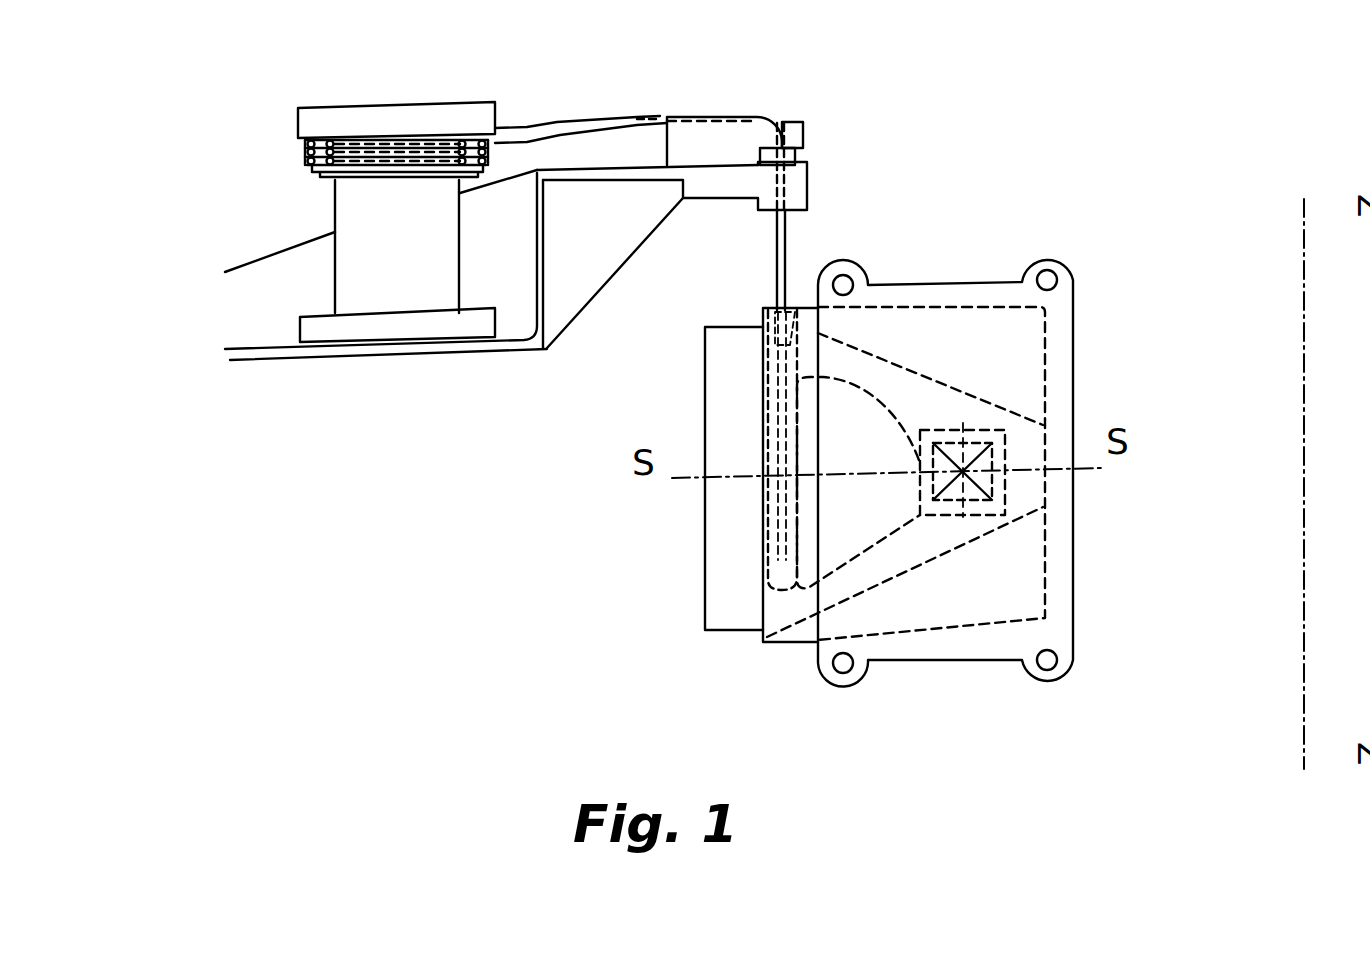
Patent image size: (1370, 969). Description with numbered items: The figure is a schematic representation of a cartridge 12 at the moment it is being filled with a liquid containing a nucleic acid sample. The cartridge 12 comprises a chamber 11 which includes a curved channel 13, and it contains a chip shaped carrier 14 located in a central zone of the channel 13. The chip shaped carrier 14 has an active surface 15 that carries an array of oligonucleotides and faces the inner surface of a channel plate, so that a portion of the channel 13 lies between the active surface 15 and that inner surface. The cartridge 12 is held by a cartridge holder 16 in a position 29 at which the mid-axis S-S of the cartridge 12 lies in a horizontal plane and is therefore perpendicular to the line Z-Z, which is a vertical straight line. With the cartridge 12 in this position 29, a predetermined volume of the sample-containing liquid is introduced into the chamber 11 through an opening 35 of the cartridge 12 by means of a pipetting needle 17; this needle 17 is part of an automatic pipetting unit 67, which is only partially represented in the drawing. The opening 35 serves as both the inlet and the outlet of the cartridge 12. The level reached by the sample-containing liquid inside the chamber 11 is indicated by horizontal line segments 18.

The automatic pipetting unit 67 is at (503, 102).
The pipetting needle 17 is at (778, 258).
The opening 35 is at (797, 308).
The chamber 11 is at (763, 638).
The cartridge 12 is at (797, 643).
The curved channel 13 is at (990, 542).
The chip shaped carrier 14 is at (983, 428).
The active surface 15 is at (983, 468).
The cartridge holder 16 is at (980, 660).
The horizontal line segments 18 is at (913, 507).
The position 29 is at (1135, 746).